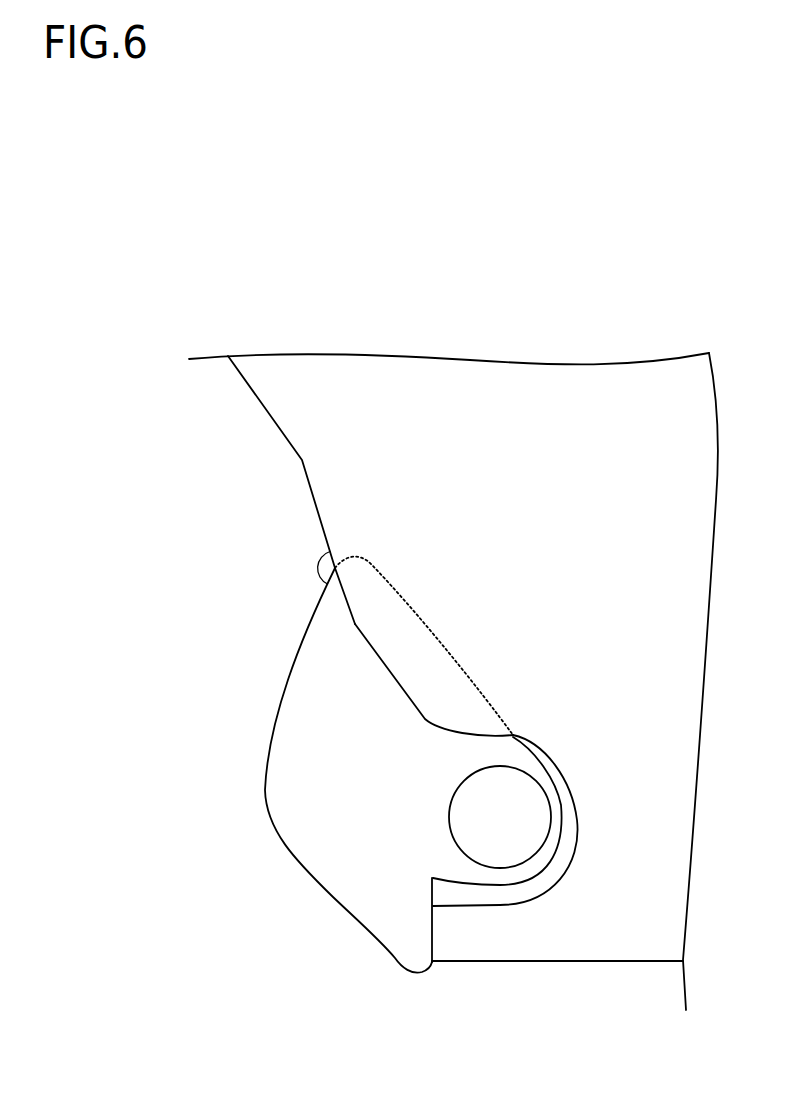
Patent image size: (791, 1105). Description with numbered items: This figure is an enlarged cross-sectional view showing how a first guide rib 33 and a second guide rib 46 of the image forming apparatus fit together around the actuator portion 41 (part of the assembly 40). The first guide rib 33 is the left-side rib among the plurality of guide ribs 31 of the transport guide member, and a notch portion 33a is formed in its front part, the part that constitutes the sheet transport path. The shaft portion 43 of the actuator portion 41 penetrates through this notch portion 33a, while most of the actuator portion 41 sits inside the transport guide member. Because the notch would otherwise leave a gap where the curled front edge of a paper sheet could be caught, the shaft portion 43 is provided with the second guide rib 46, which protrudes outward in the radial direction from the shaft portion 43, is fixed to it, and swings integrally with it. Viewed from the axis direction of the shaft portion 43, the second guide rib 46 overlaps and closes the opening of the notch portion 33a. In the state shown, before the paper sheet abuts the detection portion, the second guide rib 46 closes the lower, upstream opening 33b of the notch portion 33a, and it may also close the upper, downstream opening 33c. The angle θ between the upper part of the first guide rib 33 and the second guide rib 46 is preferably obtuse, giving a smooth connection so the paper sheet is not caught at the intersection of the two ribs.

The first guide rib 33 is at (470, 378).
The guide ribs 31 is at (453, 648).
The notch portion 33a is at (430, 757).
The opening 33b is at (445, 893).
The opening 33c is at (447, 743).
The actuator portion 41 is at (258, 770).
The attachment portion 40 is at (258, 770).
The shaft portion 43 is at (470, 819).
The second guide rib 46 is at (305, 783).